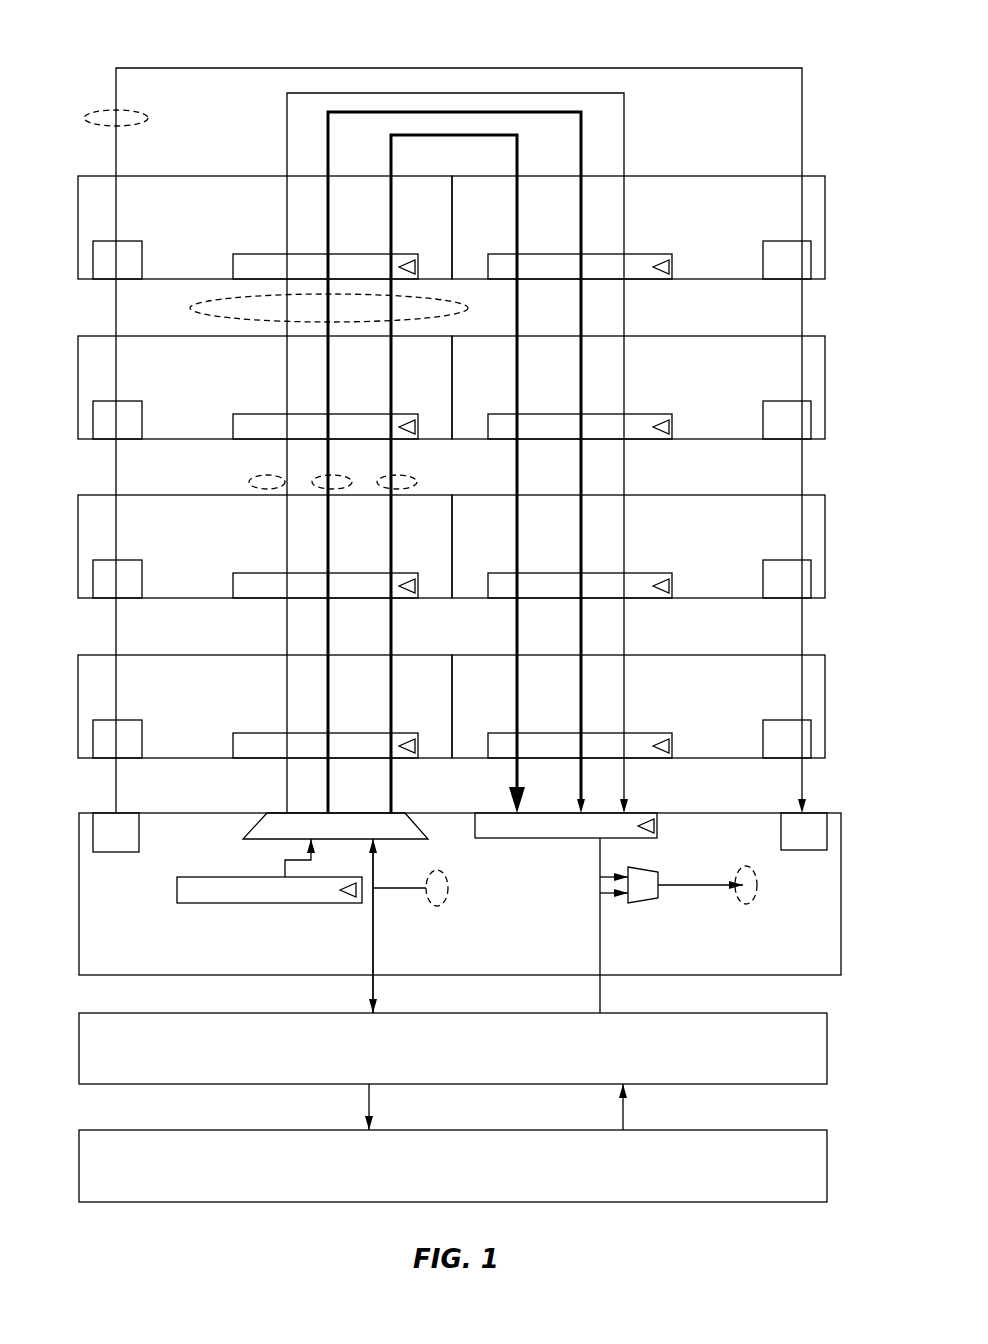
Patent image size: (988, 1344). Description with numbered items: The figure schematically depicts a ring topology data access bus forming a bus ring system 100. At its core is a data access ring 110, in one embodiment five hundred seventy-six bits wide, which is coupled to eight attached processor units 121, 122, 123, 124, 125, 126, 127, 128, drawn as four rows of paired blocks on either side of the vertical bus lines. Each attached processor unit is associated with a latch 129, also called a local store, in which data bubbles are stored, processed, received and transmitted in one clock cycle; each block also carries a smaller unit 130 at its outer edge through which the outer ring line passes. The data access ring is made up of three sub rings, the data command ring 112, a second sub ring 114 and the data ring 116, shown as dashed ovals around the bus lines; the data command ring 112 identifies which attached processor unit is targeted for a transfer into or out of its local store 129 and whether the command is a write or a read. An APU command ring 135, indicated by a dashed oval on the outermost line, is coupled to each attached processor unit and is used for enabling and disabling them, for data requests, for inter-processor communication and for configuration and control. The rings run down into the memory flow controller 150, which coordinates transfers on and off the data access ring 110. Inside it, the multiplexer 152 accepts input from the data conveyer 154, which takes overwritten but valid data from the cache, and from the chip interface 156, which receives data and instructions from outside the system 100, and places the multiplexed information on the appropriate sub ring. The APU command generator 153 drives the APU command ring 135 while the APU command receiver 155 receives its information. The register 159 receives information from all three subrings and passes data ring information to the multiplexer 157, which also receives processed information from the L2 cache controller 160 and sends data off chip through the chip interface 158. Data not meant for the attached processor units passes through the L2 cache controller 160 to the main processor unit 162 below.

The bus ring system 100 is at (750, 46).
The data access ring 110 is at (189, 307).
The data command ring 112 is at (252, 479).
The sub ring 114 is at (323, 477).
The data ring 116 is at (405, 477).
The attached processor unit 121 is at (203, 655).
The attached processor unit 122 is at (190, 495).
The attached processor unit 123 is at (203, 336).
The attached processor unit 124 is at (200, 176).
The attached processor unit 125 is at (700, 176).
The attached processor unit 126 is at (700, 336).
The attached processor unit 127 is at (700, 495).
The attached processor unit 128 is at (700, 655).
The latch 129 is at (275, 254).
The bus interface unit 130 is at (123, 241).
The APU command ring 135 is at (110, 108).
The memory flow controller 150 is at (222, 813).
The multiplexer 152 is at (275, 840).
The APU command generator 153 is at (139, 845).
The data conveyer 154 is at (177, 888).
The APU command receiver 155 is at (781, 843).
The chip interface 156 is at (449, 883).
The multiplexer 157 is at (652, 867).
The chip interface 158 is at (758, 875).
The register 159 is at (533, 838).
The L2 cache controller 160 is at (827, 1045).
The main processor unit 162 is at (827, 1160).